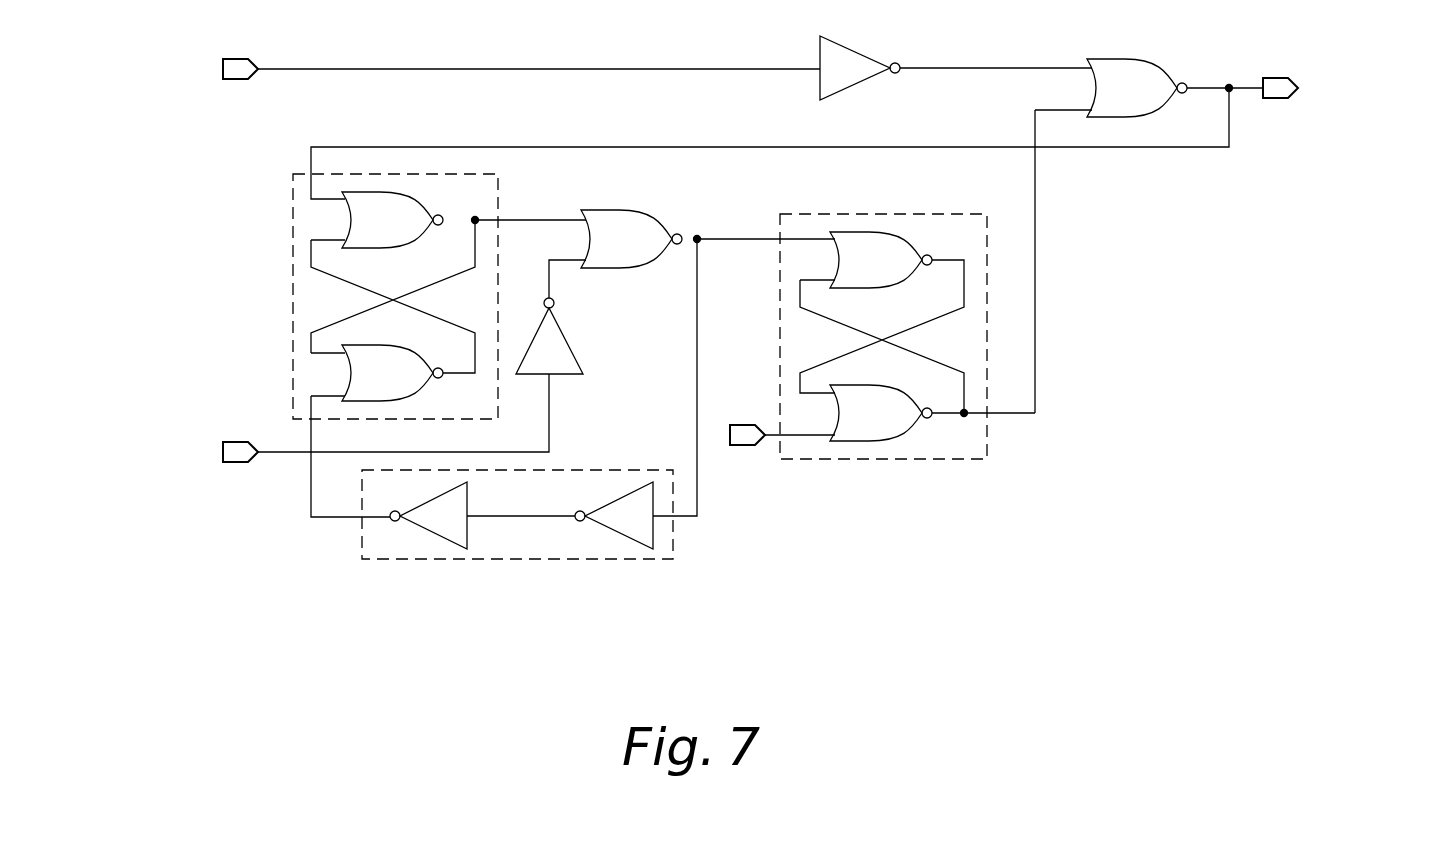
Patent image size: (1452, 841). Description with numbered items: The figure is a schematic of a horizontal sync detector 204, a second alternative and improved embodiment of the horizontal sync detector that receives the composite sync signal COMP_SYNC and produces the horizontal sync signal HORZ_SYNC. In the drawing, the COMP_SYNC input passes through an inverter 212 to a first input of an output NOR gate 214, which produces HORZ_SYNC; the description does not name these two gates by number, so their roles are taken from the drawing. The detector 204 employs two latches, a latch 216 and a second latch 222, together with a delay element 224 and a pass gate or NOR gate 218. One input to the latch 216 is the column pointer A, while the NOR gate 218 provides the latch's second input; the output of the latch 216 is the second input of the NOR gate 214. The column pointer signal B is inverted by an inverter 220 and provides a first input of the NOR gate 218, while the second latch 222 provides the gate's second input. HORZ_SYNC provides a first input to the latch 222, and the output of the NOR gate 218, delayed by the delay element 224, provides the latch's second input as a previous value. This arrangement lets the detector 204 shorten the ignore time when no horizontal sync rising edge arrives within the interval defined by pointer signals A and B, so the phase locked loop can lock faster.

The horizontal sync detector 204 is at (950, 484).
The inverter 212 is at (857, 50).
The NOR gate 214 is at (1128, 62).
The latch 216 is at (987, 338).
The NOR gate 218 is at (623, 213).
The inverter 220 is at (567, 338).
The second latch 222 is at (293, 296).
The delay element 224 is at (643, 562).